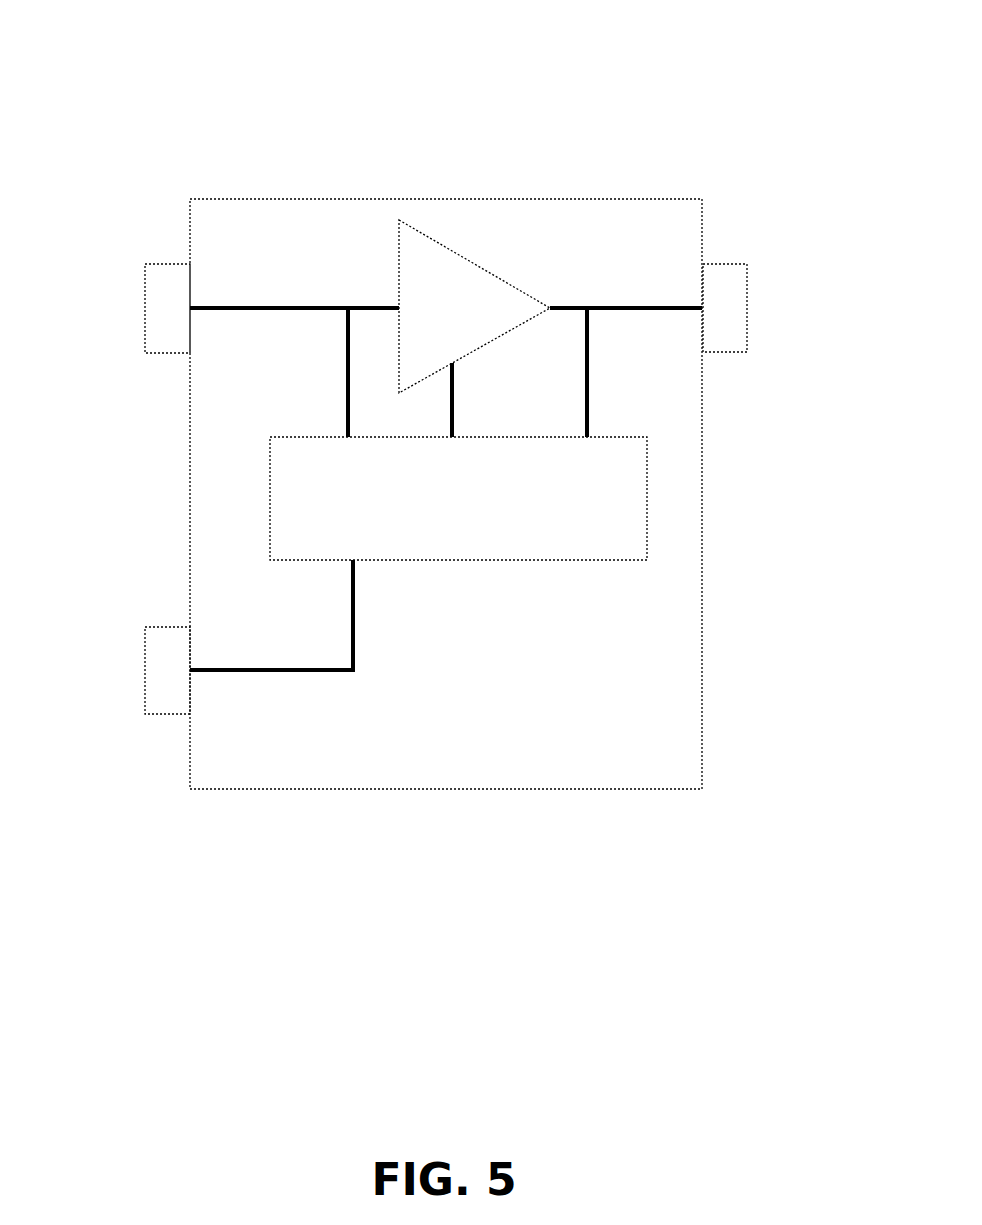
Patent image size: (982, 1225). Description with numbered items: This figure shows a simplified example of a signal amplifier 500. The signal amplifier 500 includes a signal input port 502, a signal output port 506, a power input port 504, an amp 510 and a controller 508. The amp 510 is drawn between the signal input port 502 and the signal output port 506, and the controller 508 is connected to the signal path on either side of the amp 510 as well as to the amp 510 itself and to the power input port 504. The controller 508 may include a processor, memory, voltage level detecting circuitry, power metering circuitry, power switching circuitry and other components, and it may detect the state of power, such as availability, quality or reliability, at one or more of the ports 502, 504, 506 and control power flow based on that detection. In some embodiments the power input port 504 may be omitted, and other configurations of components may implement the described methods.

The signal amplifier 500 is at (415, 36).
The signal input port 502 is at (167, 263).
The power input port 504 is at (165, 626).
The signal output port 506 is at (723, 263).
The controller 508 is at (458, 498).
The amp 510 is at (474, 306).